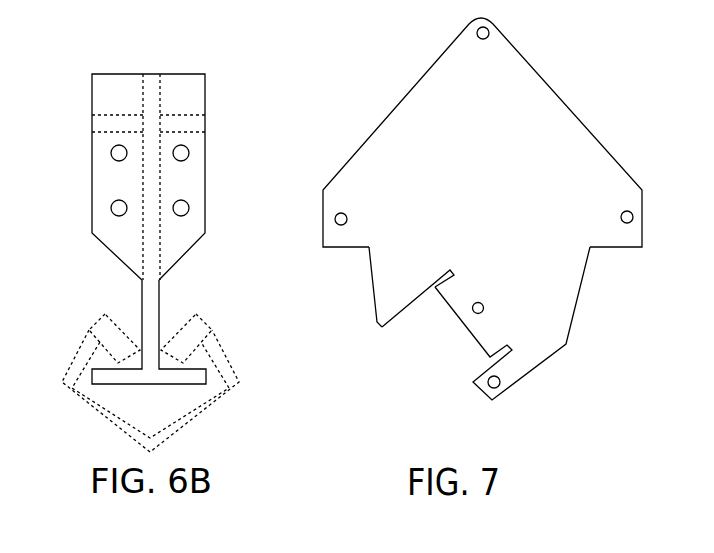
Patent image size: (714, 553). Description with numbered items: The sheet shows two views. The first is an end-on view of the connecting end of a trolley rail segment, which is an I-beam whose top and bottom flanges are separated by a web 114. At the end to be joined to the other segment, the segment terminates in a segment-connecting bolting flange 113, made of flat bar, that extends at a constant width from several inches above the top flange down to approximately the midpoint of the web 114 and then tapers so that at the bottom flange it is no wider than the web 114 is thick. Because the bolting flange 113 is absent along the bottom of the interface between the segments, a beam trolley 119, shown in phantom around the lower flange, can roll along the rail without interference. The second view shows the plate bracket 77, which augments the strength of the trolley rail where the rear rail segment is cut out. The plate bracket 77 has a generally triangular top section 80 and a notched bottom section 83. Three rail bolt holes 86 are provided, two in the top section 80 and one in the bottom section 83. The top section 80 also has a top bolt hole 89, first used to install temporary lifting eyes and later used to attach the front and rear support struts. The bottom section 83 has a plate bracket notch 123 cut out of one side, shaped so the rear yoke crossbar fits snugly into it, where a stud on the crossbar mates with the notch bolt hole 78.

In FIG. 7, the plate bracket 77 is at (485, 216).
In FIG. 7, the top section 80 is at (433, 93).
In FIG. 7, the top bolt hole 89 is at (488, 35).
In FIG. 7, the rail bolt holes 86 is at (337, 222).
In FIG. 7, the bottom section 83 is at (375, 298).
In FIG. 7, the notch bolt hole 78 is at (475, 312).
In FIG. 7, the plate bracket notch 123 is at (447, 363).
In FIG. 6B, the segment-connecting bolting flange 113 is at (120, 175).
In FIG. 6B, the web 114 is at (142, 300).
In FIG. 6B, the beam trolley 119 is at (100, 412).